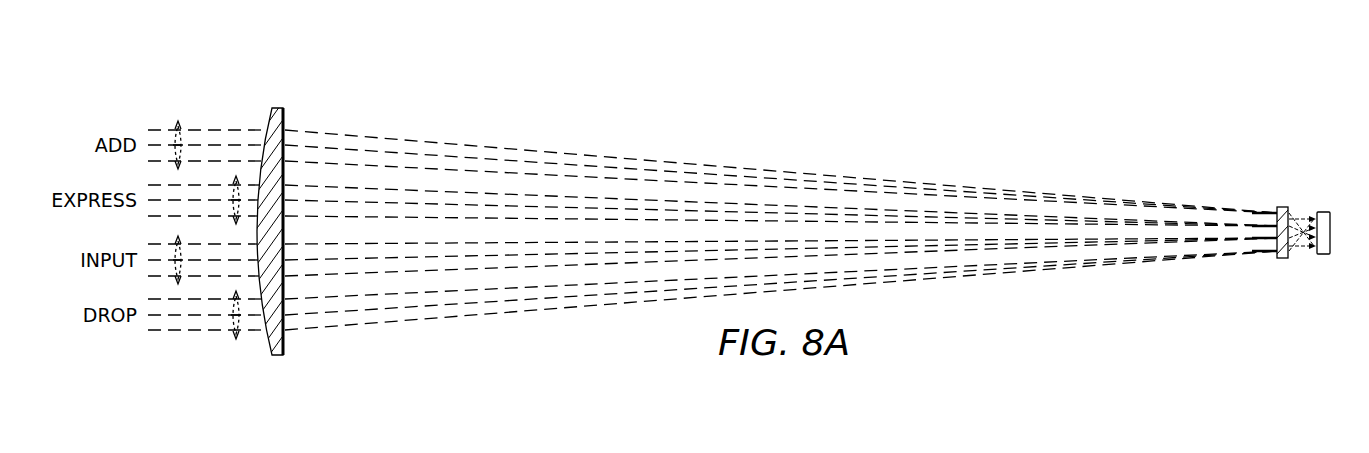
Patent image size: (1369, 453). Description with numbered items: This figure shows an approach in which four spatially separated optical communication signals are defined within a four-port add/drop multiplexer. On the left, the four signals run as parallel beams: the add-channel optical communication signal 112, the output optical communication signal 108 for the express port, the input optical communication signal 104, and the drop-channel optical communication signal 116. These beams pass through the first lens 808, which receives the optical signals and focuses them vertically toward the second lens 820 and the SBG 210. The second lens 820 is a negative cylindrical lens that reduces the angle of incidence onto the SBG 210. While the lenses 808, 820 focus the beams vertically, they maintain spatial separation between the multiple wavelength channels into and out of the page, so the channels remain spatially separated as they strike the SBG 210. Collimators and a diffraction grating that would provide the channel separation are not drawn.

The add-channel optical communication signal 112 is at (178, 122).
The output optical communication signal 108 is at (236, 176).
The input optical communication signal 104 is at (178, 284).
The drop-channel optical communication signal 116 is at (236, 339).
The first lens 808 is at (276, 108).
The second lens 820 is at (1283, 207).
The SBG 210 is at (1323, 212).